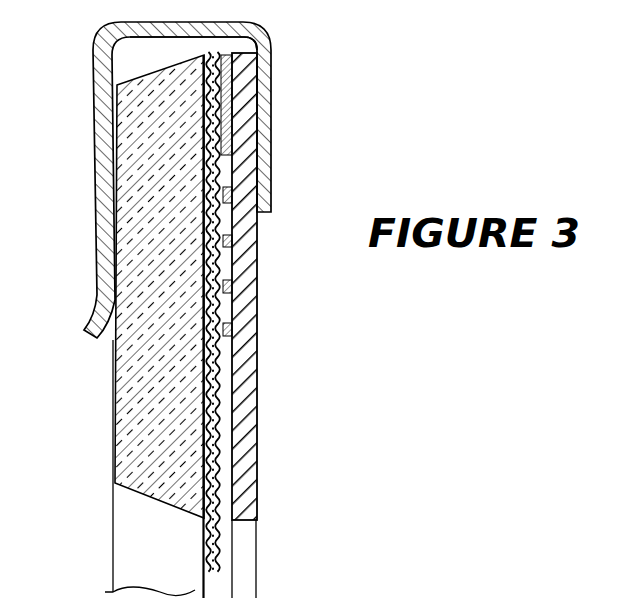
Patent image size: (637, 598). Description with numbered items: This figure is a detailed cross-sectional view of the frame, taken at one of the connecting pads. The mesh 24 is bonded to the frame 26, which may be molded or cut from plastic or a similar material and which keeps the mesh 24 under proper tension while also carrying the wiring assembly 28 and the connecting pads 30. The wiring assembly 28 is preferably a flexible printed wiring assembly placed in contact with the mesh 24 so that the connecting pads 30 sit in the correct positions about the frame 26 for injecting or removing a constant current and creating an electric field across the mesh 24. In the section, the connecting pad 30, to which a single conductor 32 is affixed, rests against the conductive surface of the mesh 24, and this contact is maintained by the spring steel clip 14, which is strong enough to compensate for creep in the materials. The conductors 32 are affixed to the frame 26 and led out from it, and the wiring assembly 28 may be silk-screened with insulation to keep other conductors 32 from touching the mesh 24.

The spring steel clip 14 is at (102, 68).
The connecting pad 30 is at (242, 45).
The frame 26 is at (125, 398).
The mesh 24 is at (215, 545).
The wiring assembly 28 is at (258, 337).
The conductor 32 is at (237, 203).